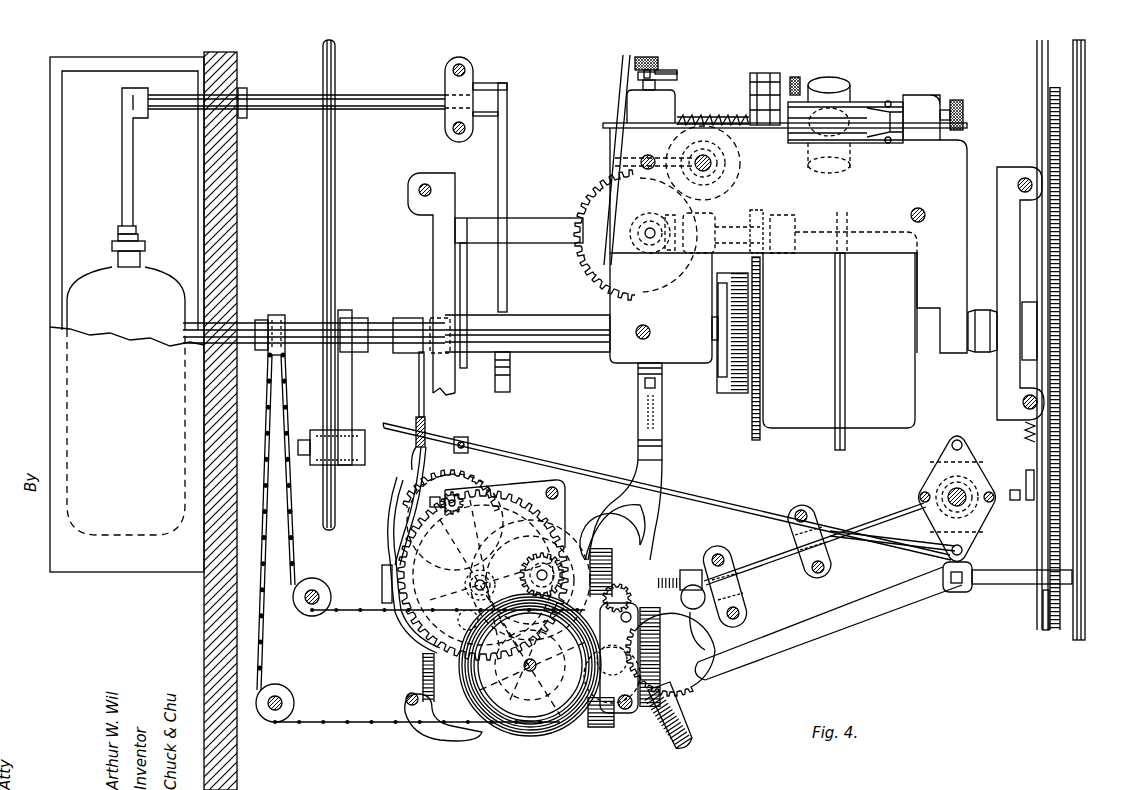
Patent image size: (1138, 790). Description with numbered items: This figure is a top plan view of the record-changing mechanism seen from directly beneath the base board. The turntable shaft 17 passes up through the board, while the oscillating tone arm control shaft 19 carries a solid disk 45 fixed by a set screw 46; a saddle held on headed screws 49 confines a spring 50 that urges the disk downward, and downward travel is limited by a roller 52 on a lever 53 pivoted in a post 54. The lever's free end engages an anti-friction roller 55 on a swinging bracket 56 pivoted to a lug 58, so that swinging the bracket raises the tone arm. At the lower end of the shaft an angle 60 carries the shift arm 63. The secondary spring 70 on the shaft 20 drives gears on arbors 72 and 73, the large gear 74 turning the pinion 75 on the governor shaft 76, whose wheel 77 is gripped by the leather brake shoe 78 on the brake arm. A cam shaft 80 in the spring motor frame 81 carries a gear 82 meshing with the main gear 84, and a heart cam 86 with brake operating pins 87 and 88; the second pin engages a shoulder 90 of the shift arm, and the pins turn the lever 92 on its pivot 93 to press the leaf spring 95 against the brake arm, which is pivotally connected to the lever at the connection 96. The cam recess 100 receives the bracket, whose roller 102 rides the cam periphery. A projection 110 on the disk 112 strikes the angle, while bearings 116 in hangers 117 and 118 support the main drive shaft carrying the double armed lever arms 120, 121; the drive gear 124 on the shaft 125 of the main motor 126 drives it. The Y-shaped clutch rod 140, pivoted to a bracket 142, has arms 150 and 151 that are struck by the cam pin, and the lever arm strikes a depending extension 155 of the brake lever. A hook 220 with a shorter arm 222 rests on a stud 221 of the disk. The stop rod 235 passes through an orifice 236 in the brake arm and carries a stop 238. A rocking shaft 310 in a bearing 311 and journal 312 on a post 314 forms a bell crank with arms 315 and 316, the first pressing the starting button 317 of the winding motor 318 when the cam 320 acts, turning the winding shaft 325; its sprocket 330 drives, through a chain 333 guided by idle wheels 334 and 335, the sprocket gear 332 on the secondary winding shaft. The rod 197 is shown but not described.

The turntable shaft 17 is at (713, 170).
The oscillating shaft 19 is at (950, 488).
The shaft 20 is at (534, 665).
The solid disk 45 is at (918, 497).
The set screw 46 is at (1030, 470).
The headed screws 49 is at (957, 440).
The spring 50 is at (990, 520).
The roller 52 is at (892, 533).
The lever 53 is at (768, 560).
The post 54 is at (831, 545).
The anti-friction roller 55 is at (690, 570).
The swinging bracket 56 is at (746, 583).
The lug 58 is at (746, 605).
The angle 60 is at (980, 572).
The shift arm 63 is at (880, 608).
The secondary spring 70 is at (548, 740).
The arbor 72 is at (540, 568).
The arbor 73 is at (476, 580).
The large gear 74 is at (505, 514).
The pinion 75 is at (462, 503).
The governor shaft 76 is at (462, 518).
The wheel 77 is at (452, 478).
The brake shoe 78 is at (415, 468).
The cam shaft 80 is at (619, 658).
The spring motor frame 81 is at (560, 497).
The gear 82 is at (618, 589).
The main gear 84 is at (612, 675).
The heart cam 86 is at (655, 545).
The brake operating pin 87 is at (625, 550).
The brake operating pin 88 is at (608, 664).
The shoulder 90 is at (688, 650).
The lever 92 is at (382, 582).
The pivot 93 is at (420, 660).
The leaf spring 95 is at (393, 530).
The pivotal connection 96 is at (454, 620).
The recess 100 is at (668, 645).
The roller 102 is at (711, 631).
The projection 110 is at (1046, 630).
The disk 112 is at (1022, 559).
The bearings 116 is at (420, 318).
The hanger 117 is at (997, 390).
The hanger 118 is at (445, 282).
The arm of double armed lever 120 is at (419, 398).
The arm of double armed lever 121 is at (352, 395).
The drive gear 124 is at (752, 440).
The shaft 125 is at (748, 335).
The main motor 126 is at (810, 428).
The clutch rod 140 is at (662, 455).
The bracket 142 is at (545, 206).
The arm 150 is at (692, 740).
The arm 151 is at (615, 553).
The depending extension 155 is at (416, 425).
The rod 197 is at (335, 205).
The hook 220 is at (1037, 100).
The stud 221 is at (1030, 443).
The shorter arm 222 is at (1039, 492).
The stop rod 235 is at (752, 508).
The orifice 236 is at (432, 435).
The stop 238 is at (468, 443).
The rocking shaft 310 is at (300, 94).
The bearing 311 is at (246, 90).
The journal 312 is at (445, 96).
The post 314 is at (473, 115).
The arm 315 is at (130, 180).
The inner arm 316 is at (507, 170).
The starting button 317 is at (136, 231).
The winding motor 318 is at (160, 258).
The cam 320 is at (510, 385).
The winding shaft 325 is at (300, 330).
The sprocket 330 is at (270, 313).
The sprocket gear 332 is at (510, 738).
The chain 333 is at (380, 710).
The idle chain guide wheel 334 is at (320, 614).
The idle chain guide wheel 335 is at (292, 695).